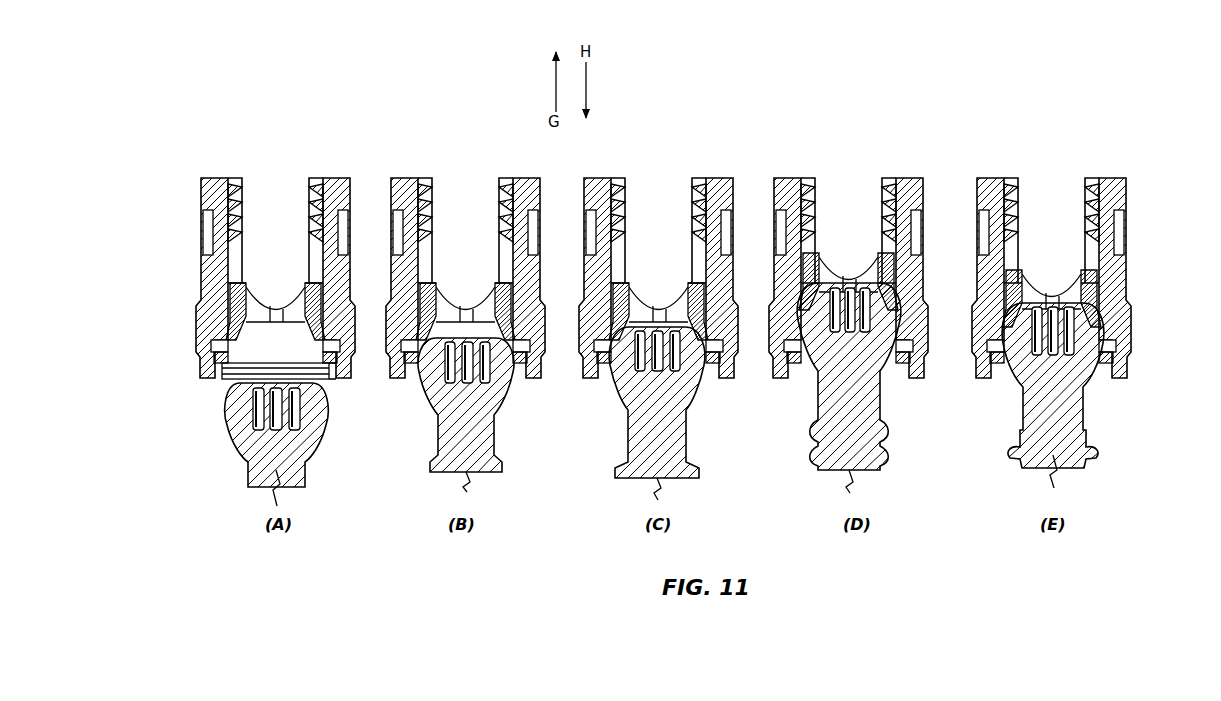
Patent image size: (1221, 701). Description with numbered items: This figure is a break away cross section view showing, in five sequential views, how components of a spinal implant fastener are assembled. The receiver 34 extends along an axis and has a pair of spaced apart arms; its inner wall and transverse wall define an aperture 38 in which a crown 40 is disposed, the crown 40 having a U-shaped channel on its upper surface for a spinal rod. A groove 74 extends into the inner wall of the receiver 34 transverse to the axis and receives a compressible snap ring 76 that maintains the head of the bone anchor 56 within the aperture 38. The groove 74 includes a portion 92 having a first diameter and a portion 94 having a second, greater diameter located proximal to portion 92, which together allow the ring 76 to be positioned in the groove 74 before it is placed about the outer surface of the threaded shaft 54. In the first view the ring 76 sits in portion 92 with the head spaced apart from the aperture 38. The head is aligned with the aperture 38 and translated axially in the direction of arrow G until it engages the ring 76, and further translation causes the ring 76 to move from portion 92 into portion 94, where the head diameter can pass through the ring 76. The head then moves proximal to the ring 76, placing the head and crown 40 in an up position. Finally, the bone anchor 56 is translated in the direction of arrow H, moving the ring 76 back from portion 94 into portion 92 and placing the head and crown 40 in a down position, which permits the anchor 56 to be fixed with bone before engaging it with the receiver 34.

The receiver 34 is at (182, 250).
The crown 40 is at (240, 292).
The portion of groove having a second diameter 94 is at (208, 347).
The aperture 38 is at (224, 380).
The compressible snap ring 76 is at (337, 380).
The portion of groove having a first diameter 92 is at (594, 372).
The threaded shaft 54 is at (832, 454).
The groove 74 is at (1133, 354).
The bone anchor 56 is at (1128, 444).